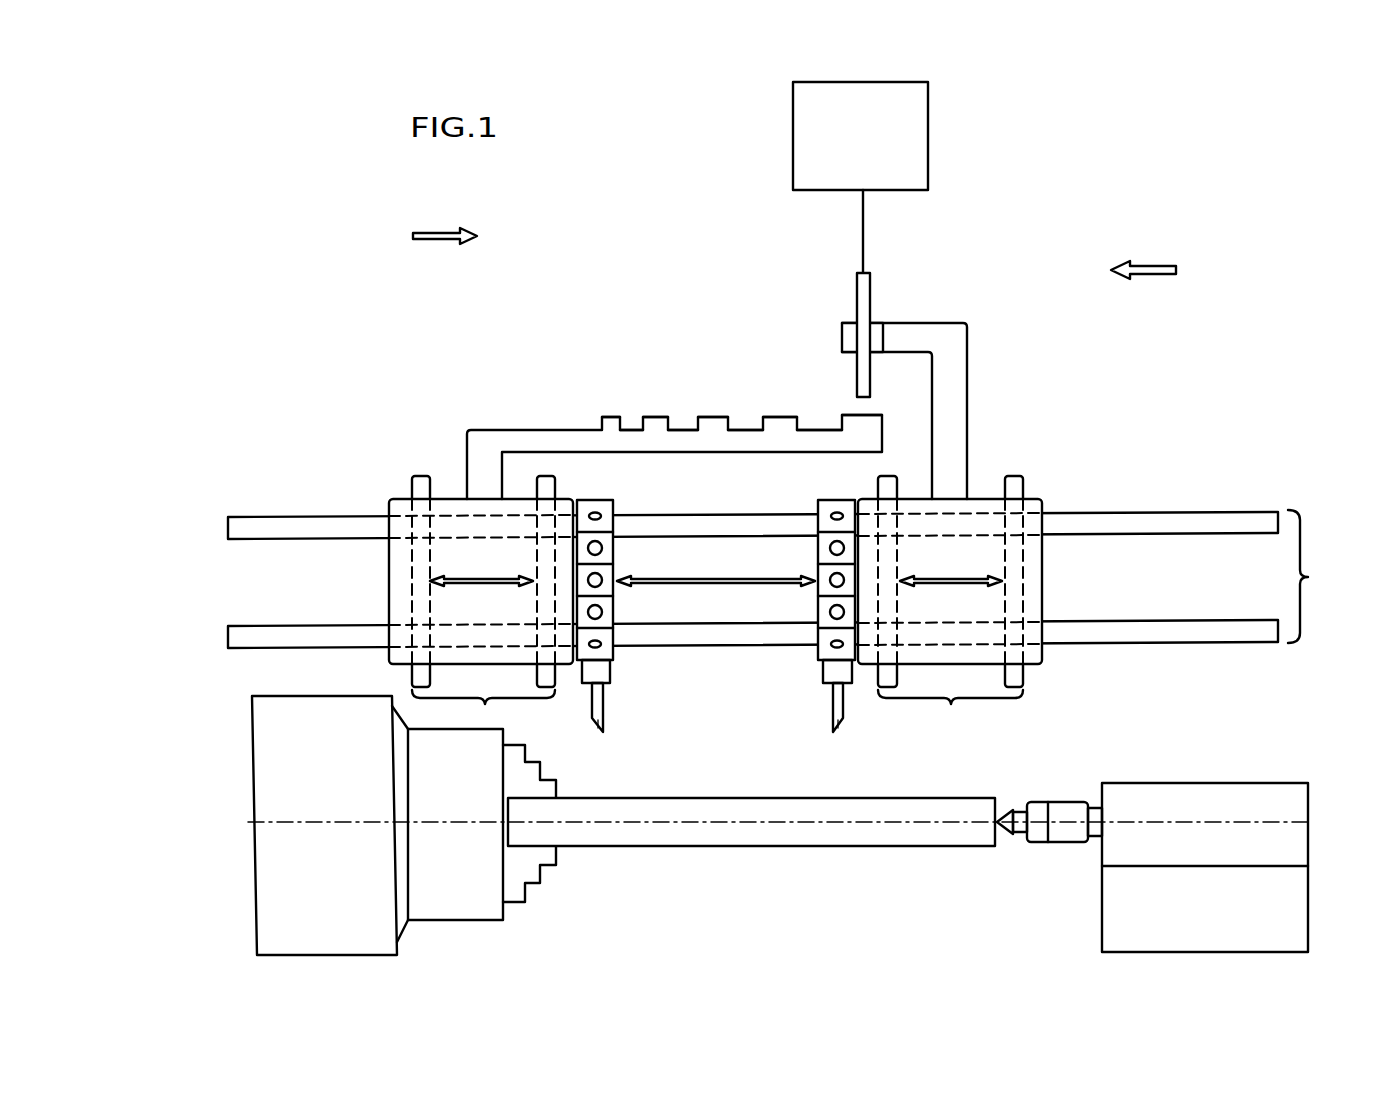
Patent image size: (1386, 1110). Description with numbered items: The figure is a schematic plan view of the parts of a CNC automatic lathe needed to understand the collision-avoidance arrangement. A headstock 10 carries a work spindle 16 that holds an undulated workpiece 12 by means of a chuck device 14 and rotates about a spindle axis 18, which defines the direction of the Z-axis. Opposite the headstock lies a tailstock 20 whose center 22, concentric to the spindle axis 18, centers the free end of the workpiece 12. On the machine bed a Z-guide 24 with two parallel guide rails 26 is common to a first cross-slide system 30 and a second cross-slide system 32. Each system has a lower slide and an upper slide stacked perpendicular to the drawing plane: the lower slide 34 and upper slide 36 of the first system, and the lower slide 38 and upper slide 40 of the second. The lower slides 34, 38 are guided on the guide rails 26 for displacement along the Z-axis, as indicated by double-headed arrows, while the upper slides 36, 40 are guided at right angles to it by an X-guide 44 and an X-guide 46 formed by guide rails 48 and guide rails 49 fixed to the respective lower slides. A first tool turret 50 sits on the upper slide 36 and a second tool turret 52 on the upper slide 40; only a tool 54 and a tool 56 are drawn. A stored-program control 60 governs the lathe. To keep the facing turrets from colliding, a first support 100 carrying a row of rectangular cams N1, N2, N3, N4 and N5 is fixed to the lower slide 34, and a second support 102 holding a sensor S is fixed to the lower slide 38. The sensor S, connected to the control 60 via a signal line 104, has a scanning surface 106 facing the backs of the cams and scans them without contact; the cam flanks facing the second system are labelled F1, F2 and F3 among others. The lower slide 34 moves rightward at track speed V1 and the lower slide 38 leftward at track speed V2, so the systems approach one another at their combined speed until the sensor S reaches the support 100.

The headstock 10 is at (405, 825).
The undulated workpiece 12 is at (760, 866).
The chuck device 14 is at (553, 878).
The work spindle 16 is at (490, 928).
The spindle axis 18 is at (322, 825).
The tailstock 20 is at (1302, 778).
The center 22 is at (1007, 812).
The Z-guide 24 is at (788, 554).
The guide rails 26 is at (1228, 512).
The first cross-slide system 30 is at (450, 595).
The second cross-slide system 32 is at (998, 579).
The lower slide 34 is at (380, 580).
The upper slide 36 is at (455, 510).
The lower slide 38 is at (1060, 553).
The upper slide 40 is at (1040, 596).
The X-guide 44 is at (483, 711).
The X-guide 46 is at (950, 713).
The guide rails 48 is at (418, 677).
The guide rails 49 is at (884, 688).
The first tool turret 50 is at (623, 492).
The second tool turret 52 is at (808, 492).
The tool 54 is at (603, 697).
The tool 56 is at (843, 700).
The control 60 is at (928, 143).
The first support 100 is at (699, 405).
The second support 102 is at (977, 377).
The signal line 104 is at (863, 210).
The scanning surface 106 is at (857, 400).
The sensor S is at (884, 375).
The cam N1 is at (870, 412).
The cam N2 is at (778, 416).
The cam N3 is at (714, 416).
The cam N4 is at (655, 416).
The cam N5 is at (605, 416).
The flank F1 is at (628, 429).
The flank F2 is at (676, 429).
The flank F3 is at (740, 429).
The track speed V1 is at (445, 220).
The track speed V2 is at (1143, 255).